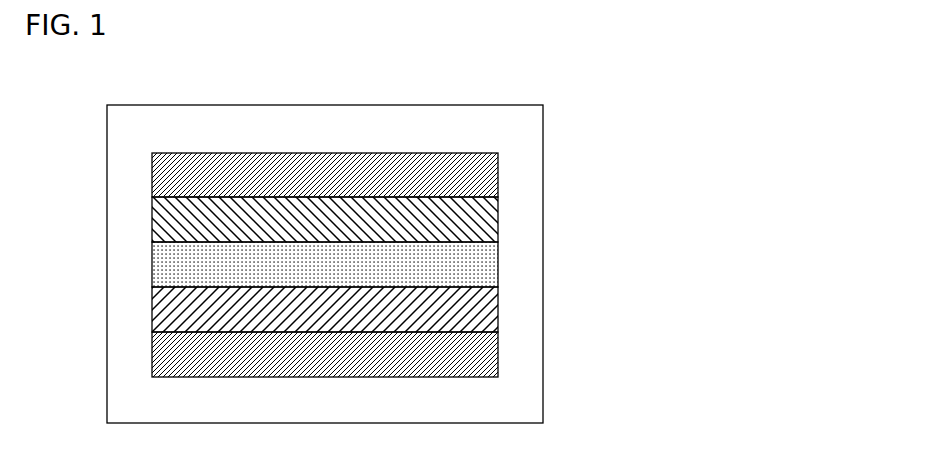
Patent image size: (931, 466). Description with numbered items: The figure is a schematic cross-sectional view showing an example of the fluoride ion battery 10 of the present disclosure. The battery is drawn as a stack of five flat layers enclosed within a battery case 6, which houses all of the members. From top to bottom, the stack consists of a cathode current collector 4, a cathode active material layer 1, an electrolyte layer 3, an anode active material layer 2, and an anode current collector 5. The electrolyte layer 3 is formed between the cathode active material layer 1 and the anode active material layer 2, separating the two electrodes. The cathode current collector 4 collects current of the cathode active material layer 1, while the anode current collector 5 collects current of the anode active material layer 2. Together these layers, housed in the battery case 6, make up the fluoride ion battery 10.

The fluoride ion battery 10 is at (470, 80).
The battery case 6 is at (510, 121).
The cathode current collector 4 is at (483, 174).
The cathode active material layer 1 is at (483, 219).
The electrolyte layer 3 is at (483, 263).
The anode active material layer 2 is at (483, 309).
The anode current collector 5 is at (483, 354).